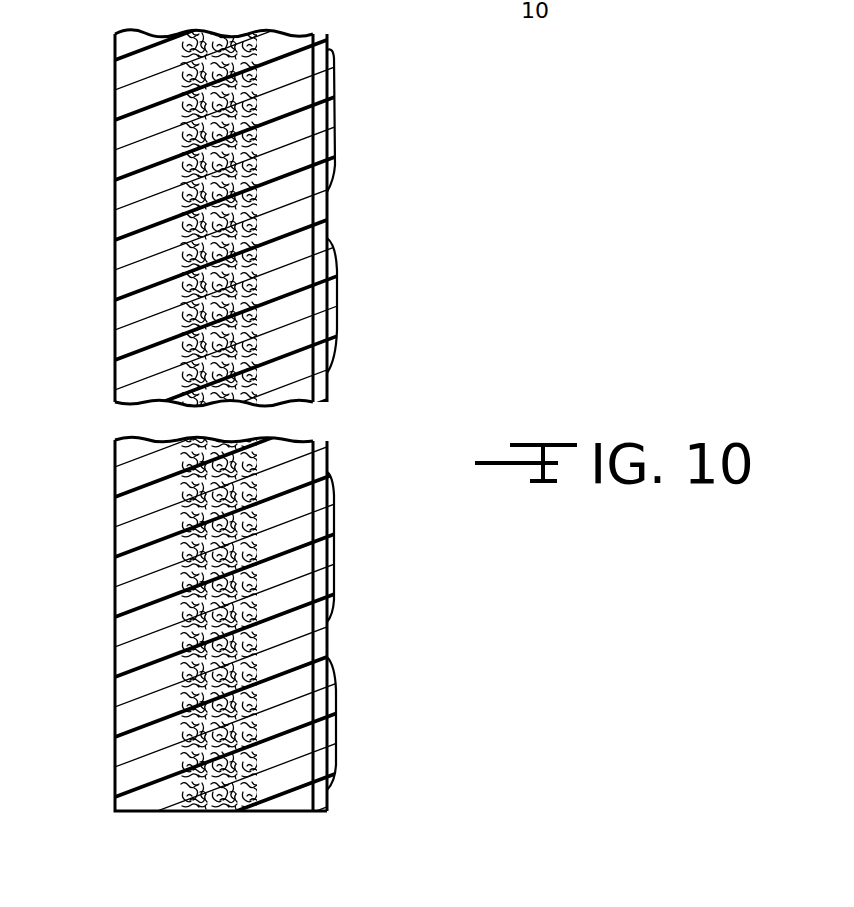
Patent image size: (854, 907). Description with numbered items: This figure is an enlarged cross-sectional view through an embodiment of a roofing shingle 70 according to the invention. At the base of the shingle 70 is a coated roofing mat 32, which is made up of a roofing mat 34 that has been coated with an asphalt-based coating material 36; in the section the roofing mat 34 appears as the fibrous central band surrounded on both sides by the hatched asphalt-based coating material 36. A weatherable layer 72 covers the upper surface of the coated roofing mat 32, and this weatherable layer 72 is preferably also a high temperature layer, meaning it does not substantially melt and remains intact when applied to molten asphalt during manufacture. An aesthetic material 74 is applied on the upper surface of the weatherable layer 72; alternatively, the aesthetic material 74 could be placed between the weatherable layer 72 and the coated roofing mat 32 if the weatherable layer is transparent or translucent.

The roofing shingle 70 is at (70, 75).
The roofing mat 34 is at (184, 197).
The asphalt-based coating material 36 is at (131, 284).
The coated roofing mat 32 is at (323, 207).
The weatherable layer 72 is at (331, 228).
The aesthetic material 74 is at (338, 299).